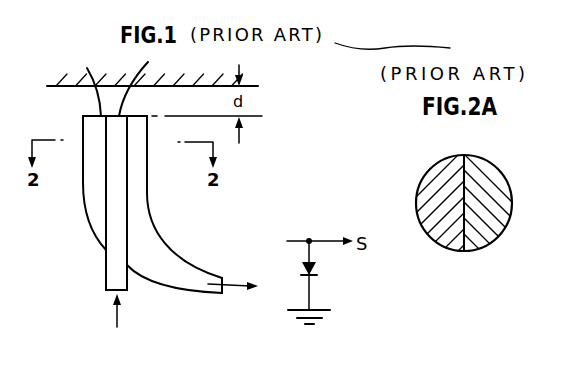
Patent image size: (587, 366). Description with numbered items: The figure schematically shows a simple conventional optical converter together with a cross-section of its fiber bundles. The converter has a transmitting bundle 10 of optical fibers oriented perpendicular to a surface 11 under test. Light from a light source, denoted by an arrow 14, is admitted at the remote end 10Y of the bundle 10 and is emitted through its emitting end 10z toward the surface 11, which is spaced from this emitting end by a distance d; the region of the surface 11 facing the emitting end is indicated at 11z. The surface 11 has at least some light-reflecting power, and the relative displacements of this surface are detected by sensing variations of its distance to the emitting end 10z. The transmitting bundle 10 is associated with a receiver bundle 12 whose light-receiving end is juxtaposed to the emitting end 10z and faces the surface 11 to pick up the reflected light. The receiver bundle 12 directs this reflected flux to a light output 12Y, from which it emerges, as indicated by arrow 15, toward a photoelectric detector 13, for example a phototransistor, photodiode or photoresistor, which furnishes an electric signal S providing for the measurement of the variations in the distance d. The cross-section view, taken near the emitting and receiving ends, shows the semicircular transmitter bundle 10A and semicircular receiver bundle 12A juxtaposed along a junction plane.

In FIG. 1, the bundle of optical fibers 10 is at (117, 203).
In FIG. 1, the emitting end 10z is at (148, 83).
In FIG. 1, the remote end 10Y is at (105, 292).
In FIG. 2A, the semicircular transmitter bundle 10A is at (486, 191).
In FIG. 1, the surface under test 11 is at (70, 86).
In FIG. 1, the surface light path 11z is at (81, 83).
In FIG. 1, the receiver bundle 12 is at (98, 174).
In FIG. 1, the light output 12Y is at (225, 279).
In FIG. 2A, the semicircular receiver bundle 12A is at (442, 183).
In FIG. 1, the photoelectric detector 13 is at (323, 268).
In FIG. 1, the arrow denoting light source 14 is at (117, 322).
In FIG. 1, the arrow indicating emerging light flux 15 is at (235, 291).